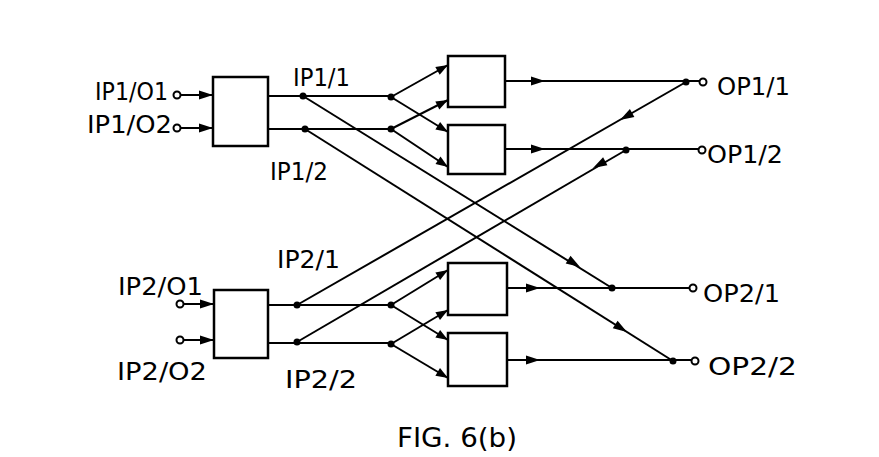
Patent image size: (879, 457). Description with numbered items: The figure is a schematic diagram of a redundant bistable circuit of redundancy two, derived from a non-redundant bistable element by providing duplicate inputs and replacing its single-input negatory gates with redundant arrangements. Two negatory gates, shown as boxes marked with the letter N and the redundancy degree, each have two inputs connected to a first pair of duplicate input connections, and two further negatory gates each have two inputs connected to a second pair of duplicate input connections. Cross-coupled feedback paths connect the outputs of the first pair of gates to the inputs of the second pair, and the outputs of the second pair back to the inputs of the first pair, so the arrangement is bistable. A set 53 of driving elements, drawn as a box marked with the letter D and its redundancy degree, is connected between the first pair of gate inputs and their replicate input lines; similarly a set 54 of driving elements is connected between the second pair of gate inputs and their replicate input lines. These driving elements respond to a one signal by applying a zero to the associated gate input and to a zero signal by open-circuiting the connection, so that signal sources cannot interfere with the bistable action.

The set of driving elements 53 is at (233, 77).
The set of driving elements 54 is at (233, 290).